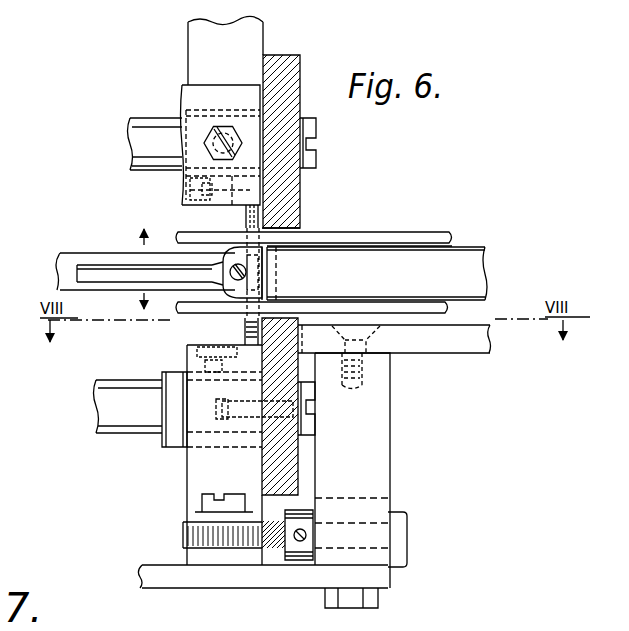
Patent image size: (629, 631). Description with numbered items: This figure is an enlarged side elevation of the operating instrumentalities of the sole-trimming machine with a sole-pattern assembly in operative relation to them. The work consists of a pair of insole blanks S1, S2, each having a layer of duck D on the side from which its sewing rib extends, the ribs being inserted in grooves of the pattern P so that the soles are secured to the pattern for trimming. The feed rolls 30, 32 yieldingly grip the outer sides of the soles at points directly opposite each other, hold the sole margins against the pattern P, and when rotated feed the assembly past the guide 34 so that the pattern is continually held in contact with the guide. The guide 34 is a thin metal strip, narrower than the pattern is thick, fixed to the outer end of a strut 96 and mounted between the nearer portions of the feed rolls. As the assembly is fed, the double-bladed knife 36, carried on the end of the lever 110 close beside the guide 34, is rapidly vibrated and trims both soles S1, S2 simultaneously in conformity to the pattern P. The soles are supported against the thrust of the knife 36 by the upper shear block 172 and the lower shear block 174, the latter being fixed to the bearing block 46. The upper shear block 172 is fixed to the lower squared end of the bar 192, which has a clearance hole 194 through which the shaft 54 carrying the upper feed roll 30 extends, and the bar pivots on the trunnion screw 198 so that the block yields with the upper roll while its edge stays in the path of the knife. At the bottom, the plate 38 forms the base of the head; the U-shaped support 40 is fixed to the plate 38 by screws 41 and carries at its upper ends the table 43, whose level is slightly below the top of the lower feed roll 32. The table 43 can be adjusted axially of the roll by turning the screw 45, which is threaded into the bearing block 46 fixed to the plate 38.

The bar 192 is at (200, 48).
The clearance hole 194 is at (208, 110).
The shaft 54 is at (143, 133).
The trunnion screw 198 is at (216, 146).
The upper shear block 172 is at (244, 218).
The feed roll 30 is at (287, 55).
The knife 36 is at (258, 238).
The insole blank S1 is at (417, 235).
The layer of duck D is at (387, 243).
The pattern P is at (463, 277).
The insole blank S2 is at (427, 312).
The lever 110 is at (63, 262).
The strut 96 is at (118, 268).
The guide 34 is at (271, 278).
The lower shear block 174 is at (243, 330).
The table 43 is at (490, 342).
The feed roll 32 is at (280, 477).
The U-shaped support 40 is at (375, 437).
The bearing block 46 is at (193, 473).
The screw 45 is at (400, 540).
The plate 38 is at (287, 580).
The screw 41 is at (367, 610).